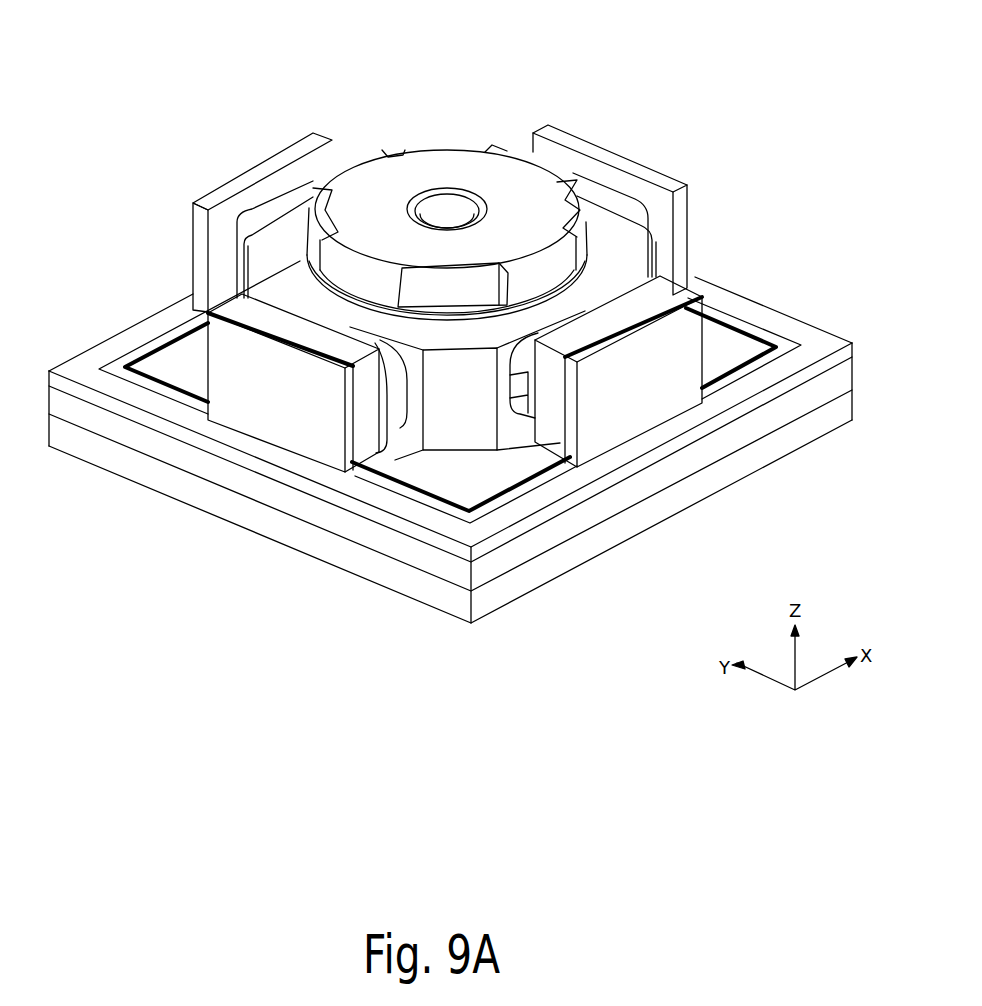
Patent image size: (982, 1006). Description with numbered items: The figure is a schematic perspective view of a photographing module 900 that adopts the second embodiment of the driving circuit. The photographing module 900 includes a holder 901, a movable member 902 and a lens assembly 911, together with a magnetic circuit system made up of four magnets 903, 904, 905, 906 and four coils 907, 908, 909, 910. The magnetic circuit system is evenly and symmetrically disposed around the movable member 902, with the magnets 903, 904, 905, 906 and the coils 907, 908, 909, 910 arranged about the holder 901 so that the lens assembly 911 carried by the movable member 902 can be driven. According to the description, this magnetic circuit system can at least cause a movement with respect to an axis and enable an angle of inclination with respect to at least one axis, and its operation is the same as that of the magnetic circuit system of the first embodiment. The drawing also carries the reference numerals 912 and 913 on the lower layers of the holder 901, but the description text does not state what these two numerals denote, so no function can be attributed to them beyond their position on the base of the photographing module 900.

The photographing module 900 is at (745, 121).
The holder 901 is at (96, 377).
The movable member 902 is at (612, 253).
The magnet 903 is at (225, 230).
The magnet 904 is at (580, 157).
The magnet 905 is at (633, 307).
The magnet 906 is at (373, 428).
The coil 907 is at (303, 207).
The coil 908 is at (655, 228).
The coil 909 is at (525, 392).
The coil 910 is at (402, 402).
The lens assembly 911 is at (437, 162).
The circuit board 912 is at (663, 473).
The substrate 913 is at (233, 507).